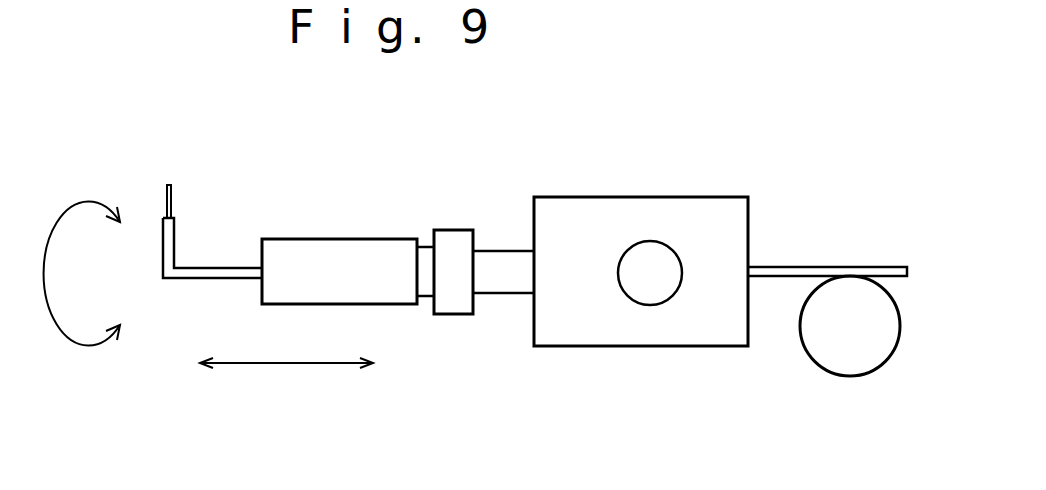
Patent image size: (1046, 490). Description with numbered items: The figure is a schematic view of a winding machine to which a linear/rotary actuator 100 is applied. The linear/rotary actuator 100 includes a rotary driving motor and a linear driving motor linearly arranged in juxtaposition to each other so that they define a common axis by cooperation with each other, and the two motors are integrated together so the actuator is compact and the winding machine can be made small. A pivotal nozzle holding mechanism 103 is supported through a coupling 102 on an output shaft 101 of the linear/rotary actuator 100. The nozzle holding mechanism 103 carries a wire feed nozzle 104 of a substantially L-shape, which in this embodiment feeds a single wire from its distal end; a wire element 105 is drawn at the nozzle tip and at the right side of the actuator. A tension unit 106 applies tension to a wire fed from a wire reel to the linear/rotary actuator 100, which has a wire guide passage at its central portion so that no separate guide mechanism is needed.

The linear/rotary actuator 100 is at (664, 210).
The output shaft 101 is at (497, 260).
The coupling 102 is at (445, 246).
The nozzle holding mechanism 103 is at (321, 251).
The wire feed nozzle 104 is at (203, 266).
The blade / member 105 is at (172, 200).
The tension unit 106 is at (853, 356).